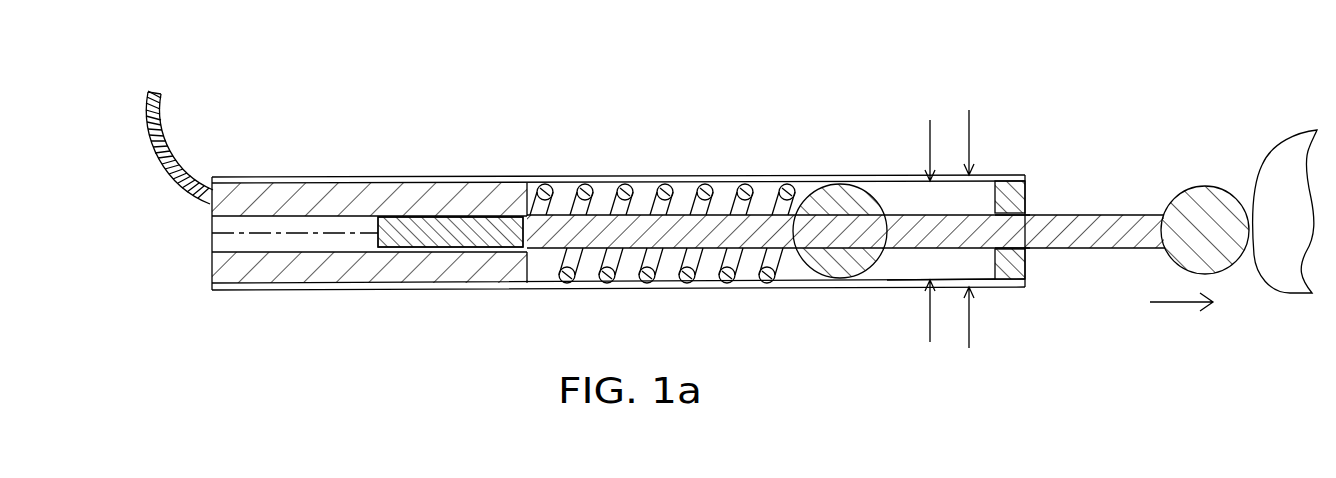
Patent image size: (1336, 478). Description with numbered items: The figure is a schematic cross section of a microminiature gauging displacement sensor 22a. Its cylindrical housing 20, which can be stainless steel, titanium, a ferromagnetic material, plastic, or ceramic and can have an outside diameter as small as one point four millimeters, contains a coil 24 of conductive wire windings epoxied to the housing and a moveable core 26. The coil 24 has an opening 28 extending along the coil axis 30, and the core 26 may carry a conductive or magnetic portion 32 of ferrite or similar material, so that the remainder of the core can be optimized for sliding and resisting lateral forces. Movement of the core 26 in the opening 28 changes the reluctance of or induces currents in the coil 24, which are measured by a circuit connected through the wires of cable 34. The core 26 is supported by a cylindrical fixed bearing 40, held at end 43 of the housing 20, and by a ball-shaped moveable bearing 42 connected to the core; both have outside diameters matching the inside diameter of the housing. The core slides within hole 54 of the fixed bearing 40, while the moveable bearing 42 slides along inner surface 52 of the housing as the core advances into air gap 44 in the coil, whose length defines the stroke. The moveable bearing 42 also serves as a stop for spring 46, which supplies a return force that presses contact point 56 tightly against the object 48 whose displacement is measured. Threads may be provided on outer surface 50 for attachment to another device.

The cylindrical housing 20 is at (242, 180).
The microminiature gauging displacement sensor 22a is at (797, 125).
The coil 24 is at (340, 192).
The moveable core 26 is at (1108, 238).
The opening 28 is at (452, 223).
The coil axis 30 is at (278, 233).
The conductive or magnetic portion 32 is at (390, 217).
The cable 34 is at (162, 172).
The fixed bearing 40 is at (1023, 188).
The moveable bearing 42 is at (830, 267).
The end 43 is at (1020, 168).
The air gap 44 is at (357, 245).
The spring 46 is at (587, 200).
The object 48 is at (1290, 152).
The outer surface 50 is at (273, 185).
The inner surface 52 is at (897, 282).
The hole 54 is at (1025, 244).
The contact point 56 is at (1210, 187).